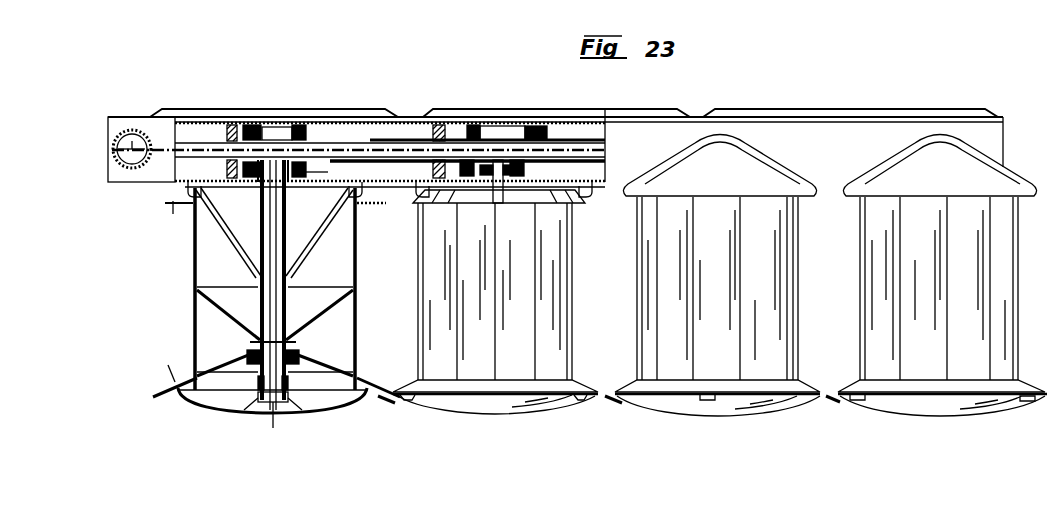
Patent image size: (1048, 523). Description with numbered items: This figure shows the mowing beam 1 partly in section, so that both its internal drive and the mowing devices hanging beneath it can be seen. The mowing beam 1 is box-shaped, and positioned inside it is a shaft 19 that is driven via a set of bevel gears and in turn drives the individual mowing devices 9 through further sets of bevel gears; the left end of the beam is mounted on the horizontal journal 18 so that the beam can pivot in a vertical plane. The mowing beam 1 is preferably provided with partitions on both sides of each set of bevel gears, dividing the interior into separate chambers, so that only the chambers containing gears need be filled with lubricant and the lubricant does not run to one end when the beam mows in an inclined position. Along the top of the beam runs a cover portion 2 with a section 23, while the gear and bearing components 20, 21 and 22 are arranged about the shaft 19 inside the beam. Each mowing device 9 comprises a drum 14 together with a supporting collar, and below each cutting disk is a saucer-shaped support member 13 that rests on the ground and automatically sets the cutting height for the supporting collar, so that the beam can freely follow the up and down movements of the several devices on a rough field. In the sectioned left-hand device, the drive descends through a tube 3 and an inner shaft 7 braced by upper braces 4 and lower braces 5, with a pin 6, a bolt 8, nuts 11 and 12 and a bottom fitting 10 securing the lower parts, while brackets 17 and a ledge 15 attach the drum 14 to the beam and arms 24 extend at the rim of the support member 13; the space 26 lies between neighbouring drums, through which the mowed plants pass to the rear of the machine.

The mowing beam 1 is at (990, 142).
The top beam 2 is at (818, 114).
The outer tube 3 is at (293, 207).
The upper brace 4 is at (224, 213).
The lower brace 5 is at (300, 328).
The pin 6 is at (321, 173).
The inner shaft 7 is at (293, 278).
The bolt 8 is at (297, 345).
The mowing device 9 is at (213, 360).
The bottom fitting 10 is at (293, 408).
The nut 11 is at (300, 380).
The nut 12 is at (257, 379).
The saucer-shaped support member 13 is at (216, 412).
The drum 14 is at (192, 258).
The ledge 15 is at (173, 214).
The bracket 17 is at (178, 190).
The horizontal journal 18 is at (112, 158).
The shaft 19 is at (202, 143).
The bearing 20 is at (255, 128).
The post 21 is at (518, 167).
The bearing block 22 is at (298, 127).
The beam section 23 is at (425, 114).
The arm 24 is at (378, 405).
The space 26 is at (401, 325).